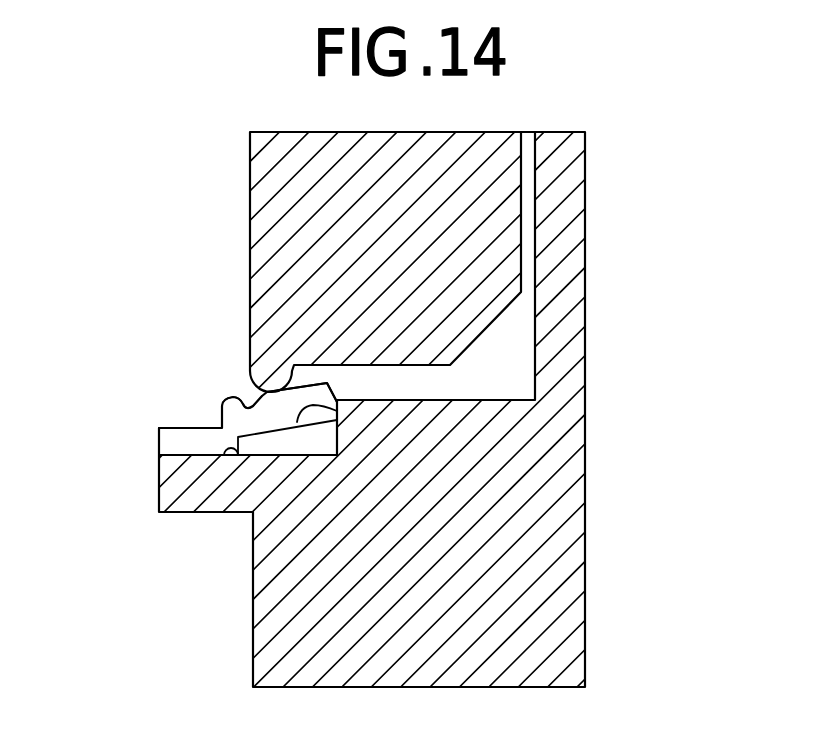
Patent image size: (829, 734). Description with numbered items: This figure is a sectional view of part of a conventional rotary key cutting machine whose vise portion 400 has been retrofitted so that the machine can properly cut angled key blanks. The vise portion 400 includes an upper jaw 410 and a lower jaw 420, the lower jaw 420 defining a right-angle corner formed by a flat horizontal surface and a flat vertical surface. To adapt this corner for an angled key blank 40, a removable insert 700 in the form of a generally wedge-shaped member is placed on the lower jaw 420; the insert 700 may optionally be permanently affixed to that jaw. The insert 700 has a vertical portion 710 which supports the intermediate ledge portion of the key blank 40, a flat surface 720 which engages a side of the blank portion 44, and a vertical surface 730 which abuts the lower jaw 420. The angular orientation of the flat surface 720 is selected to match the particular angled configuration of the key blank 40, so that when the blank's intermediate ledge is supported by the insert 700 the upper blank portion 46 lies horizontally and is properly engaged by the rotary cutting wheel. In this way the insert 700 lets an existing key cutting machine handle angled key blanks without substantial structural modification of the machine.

The vise portion 400 is at (290, 113).
The upper jaw 410 is at (280, 245).
The lower jaw 420 is at (550, 667).
The key blank 40 is at (172, 410).
The blank portion 44 is at (266, 389).
The upper blank portion 46 is at (166, 442).
The removable insert 700 is at (318, 468).
The vertical portion 710 is at (228, 443).
The flat surface 720 is at (337, 402).
The vertical surface 730 is at (333, 434).